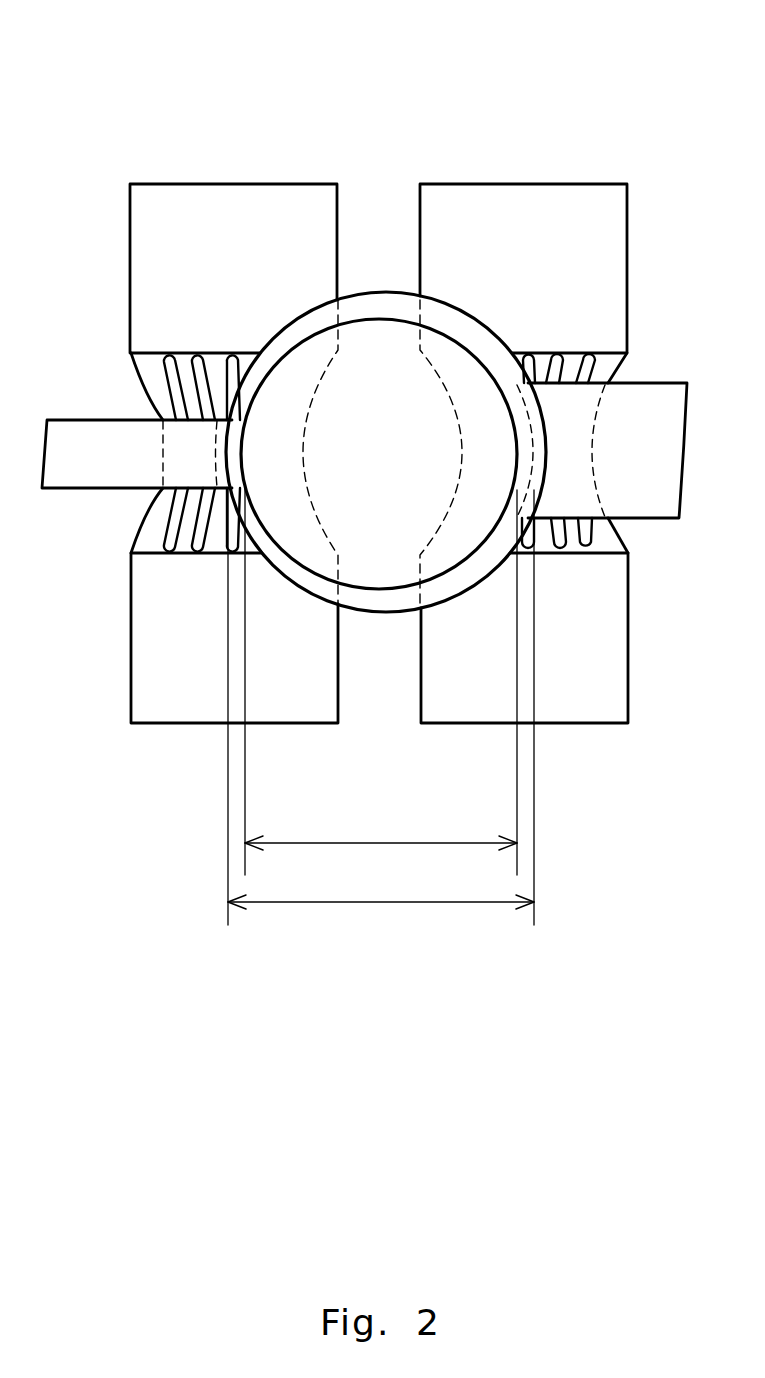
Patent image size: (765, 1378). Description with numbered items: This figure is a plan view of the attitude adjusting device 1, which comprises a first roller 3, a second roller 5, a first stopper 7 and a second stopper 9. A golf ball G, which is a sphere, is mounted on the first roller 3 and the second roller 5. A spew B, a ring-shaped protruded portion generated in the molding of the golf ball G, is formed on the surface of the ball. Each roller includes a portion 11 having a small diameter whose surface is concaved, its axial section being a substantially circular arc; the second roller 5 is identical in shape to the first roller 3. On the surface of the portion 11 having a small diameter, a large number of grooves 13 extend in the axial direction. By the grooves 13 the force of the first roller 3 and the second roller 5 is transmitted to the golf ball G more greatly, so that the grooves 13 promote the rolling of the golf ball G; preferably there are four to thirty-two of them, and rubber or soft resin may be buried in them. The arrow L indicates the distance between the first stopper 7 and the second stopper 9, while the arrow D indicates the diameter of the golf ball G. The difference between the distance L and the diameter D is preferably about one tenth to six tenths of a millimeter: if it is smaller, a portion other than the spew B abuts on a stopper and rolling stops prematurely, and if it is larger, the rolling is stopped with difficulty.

The attitude adjusting device 1 is at (592, 158).
The first roller 3 is at (615, 705).
The second roller 5 is at (155, 712).
The first stopper 7 is at (658, 498).
The second stopper 9 is at (72, 475).
The portion having a small diameter 11 is at (143, 385).
The groove 13 is at (238, 356).
The spew B is at (378, 306).
The golf ball G is at (407, 407).
The diameter of the golf ball D is at (381, 681).
The distance between the first stopper and the second stopper L is at (381, 706).